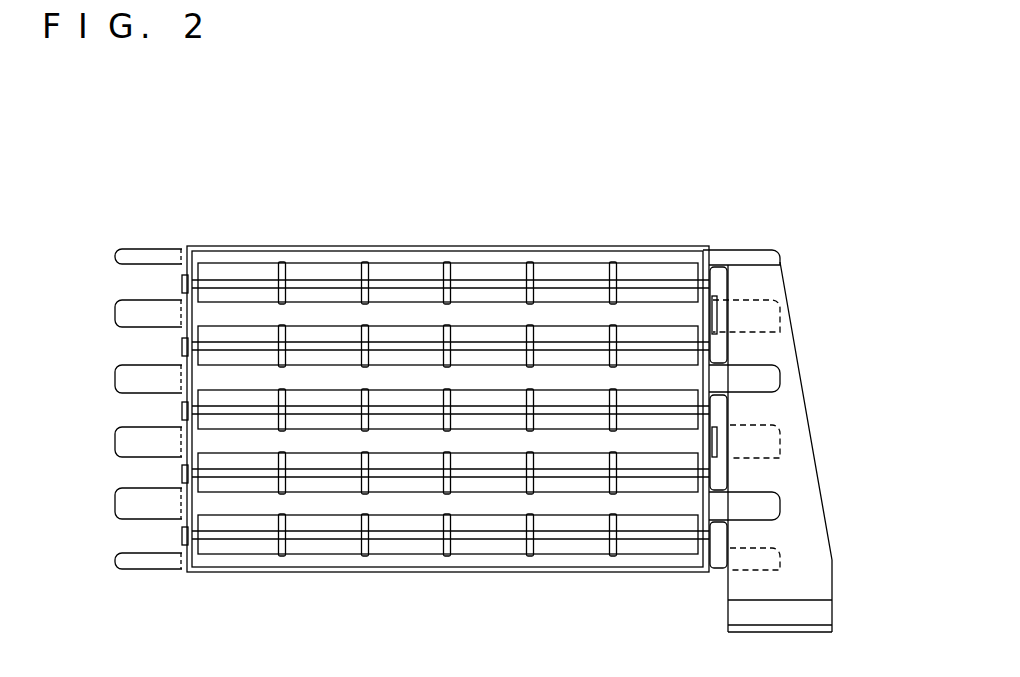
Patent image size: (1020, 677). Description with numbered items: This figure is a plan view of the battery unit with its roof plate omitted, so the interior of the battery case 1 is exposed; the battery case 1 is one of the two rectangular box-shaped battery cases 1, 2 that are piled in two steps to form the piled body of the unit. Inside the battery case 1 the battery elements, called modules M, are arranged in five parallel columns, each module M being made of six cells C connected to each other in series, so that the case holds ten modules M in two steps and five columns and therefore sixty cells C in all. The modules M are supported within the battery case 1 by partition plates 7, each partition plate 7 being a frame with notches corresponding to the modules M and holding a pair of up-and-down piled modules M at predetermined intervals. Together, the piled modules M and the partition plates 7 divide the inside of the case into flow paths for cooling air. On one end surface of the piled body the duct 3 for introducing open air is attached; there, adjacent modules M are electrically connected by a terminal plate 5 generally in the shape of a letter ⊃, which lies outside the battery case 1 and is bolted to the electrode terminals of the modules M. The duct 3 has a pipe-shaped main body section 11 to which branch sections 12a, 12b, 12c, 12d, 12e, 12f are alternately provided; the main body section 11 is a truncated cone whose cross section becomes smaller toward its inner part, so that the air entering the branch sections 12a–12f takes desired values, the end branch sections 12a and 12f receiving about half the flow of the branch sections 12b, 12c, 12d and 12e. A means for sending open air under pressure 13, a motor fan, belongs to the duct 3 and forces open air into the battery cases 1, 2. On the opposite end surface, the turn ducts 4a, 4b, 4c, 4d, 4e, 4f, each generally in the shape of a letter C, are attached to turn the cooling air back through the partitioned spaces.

The battery case 1 is at (455, 246).
The battery case 2 is at (447, 409).
The duct for introducing open air 3 is at (767, 417).
The turn duct 4a is at (143, 561).
The turn duct 4b is at (143, 503).
The turn duct 4c is at (143, 442).
The turn duct 4d is at (143, 379).
The turn duct 4e is at (143, 314).
The turn duct 4f is at (143, 256).
The terminal plate 5 is at (727, 340).
The partition plate 7 is at (579, 280).
The main body section 11 is at (808, 385).
The branch section 12a is at (742, 555).
The branch section 12b is at (742, 492).
The branch section 12c is at (793, 427).
The branch section 12d is at (780, 365).
The branch section 12e is at (782, 300).
The branch section 12f is at (745, 250).
The means for sending open air under pressure 13 is at (740, 615).
The cell C is at (258, 262).
The module M is at (217, 249).